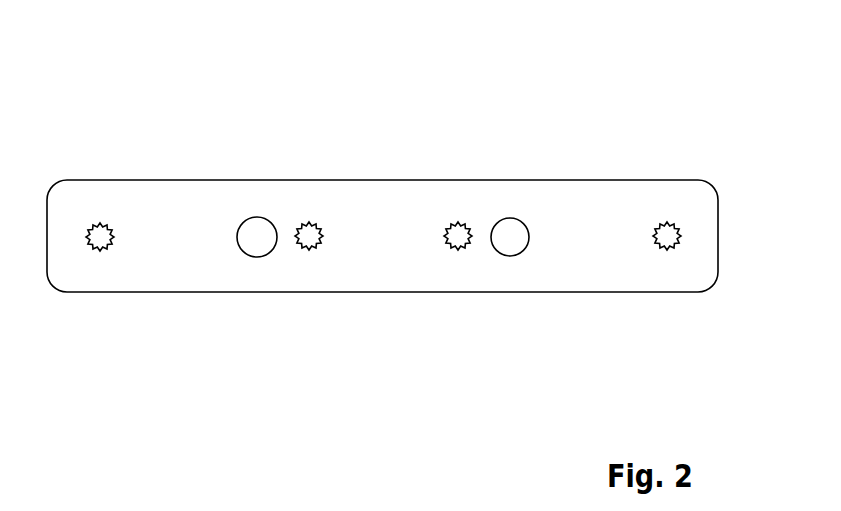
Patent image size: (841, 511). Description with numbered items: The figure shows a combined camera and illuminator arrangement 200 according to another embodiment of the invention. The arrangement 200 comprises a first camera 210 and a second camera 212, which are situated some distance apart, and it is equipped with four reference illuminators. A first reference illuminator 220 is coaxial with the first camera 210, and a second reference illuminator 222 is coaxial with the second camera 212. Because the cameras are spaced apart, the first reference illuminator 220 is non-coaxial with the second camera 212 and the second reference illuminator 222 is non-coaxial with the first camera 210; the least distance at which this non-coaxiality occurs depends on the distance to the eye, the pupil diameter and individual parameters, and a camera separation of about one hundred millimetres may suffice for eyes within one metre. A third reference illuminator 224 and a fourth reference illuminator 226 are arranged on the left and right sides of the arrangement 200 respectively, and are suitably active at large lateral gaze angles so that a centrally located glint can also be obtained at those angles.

The combined camera and illuminator arrangement 200 is at (114, 137).
The first camera 210 is at (257, 217).
The second camera 212 is at (510, 218).
The first reference illuminator 220 is at (309, 250).
The second reference illuminator 222 is at (458, 250).
The third reference illuminator 224 is at (100, 251).
The fourth reference illuminator 226 is at (667, 250).